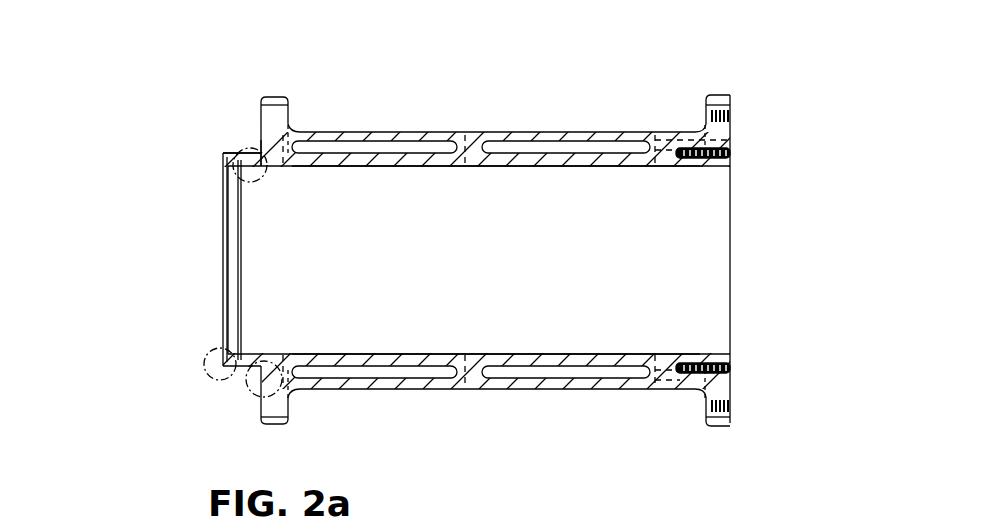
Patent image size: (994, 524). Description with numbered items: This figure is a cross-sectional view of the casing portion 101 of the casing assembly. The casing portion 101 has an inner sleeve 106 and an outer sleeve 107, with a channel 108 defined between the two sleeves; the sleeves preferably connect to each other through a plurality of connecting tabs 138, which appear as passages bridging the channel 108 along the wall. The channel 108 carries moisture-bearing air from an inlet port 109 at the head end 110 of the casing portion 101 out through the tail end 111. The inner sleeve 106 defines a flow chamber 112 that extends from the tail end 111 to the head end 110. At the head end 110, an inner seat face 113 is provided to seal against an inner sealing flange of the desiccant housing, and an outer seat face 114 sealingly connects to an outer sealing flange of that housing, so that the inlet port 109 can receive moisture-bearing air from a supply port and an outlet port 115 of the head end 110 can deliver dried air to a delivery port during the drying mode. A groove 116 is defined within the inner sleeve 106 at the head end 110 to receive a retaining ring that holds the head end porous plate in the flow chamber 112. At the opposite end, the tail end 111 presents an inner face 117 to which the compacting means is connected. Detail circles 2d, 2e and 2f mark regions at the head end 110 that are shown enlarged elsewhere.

The casing portion 101 is at (585, 106).
The outer seat face 114 is at (258, 151).
The inlet port 109 is at (258, 152).
The inner seat face 113 is at (224, 156).
The head end 110 is at (225, 334).
The groove 116 is at (239, 300).
The outlet port 115 is at (198, 254).
The channel 108 is at (404, 142).
The outer sleeve 107 is at (563, 390).
The inner sleeve 106 is at (330, 168).
The flow chamber 112 is at (362, 356).
The connecting tabs 138 is at (465, 148).
The inner face 117 is at (732, 164).
The tail end 111 is at (732, 381).
The detail circle 2d is at (236, 177).
The detail circle 2e is at (212, 372).
The detail circle 2f is at (252, 392).